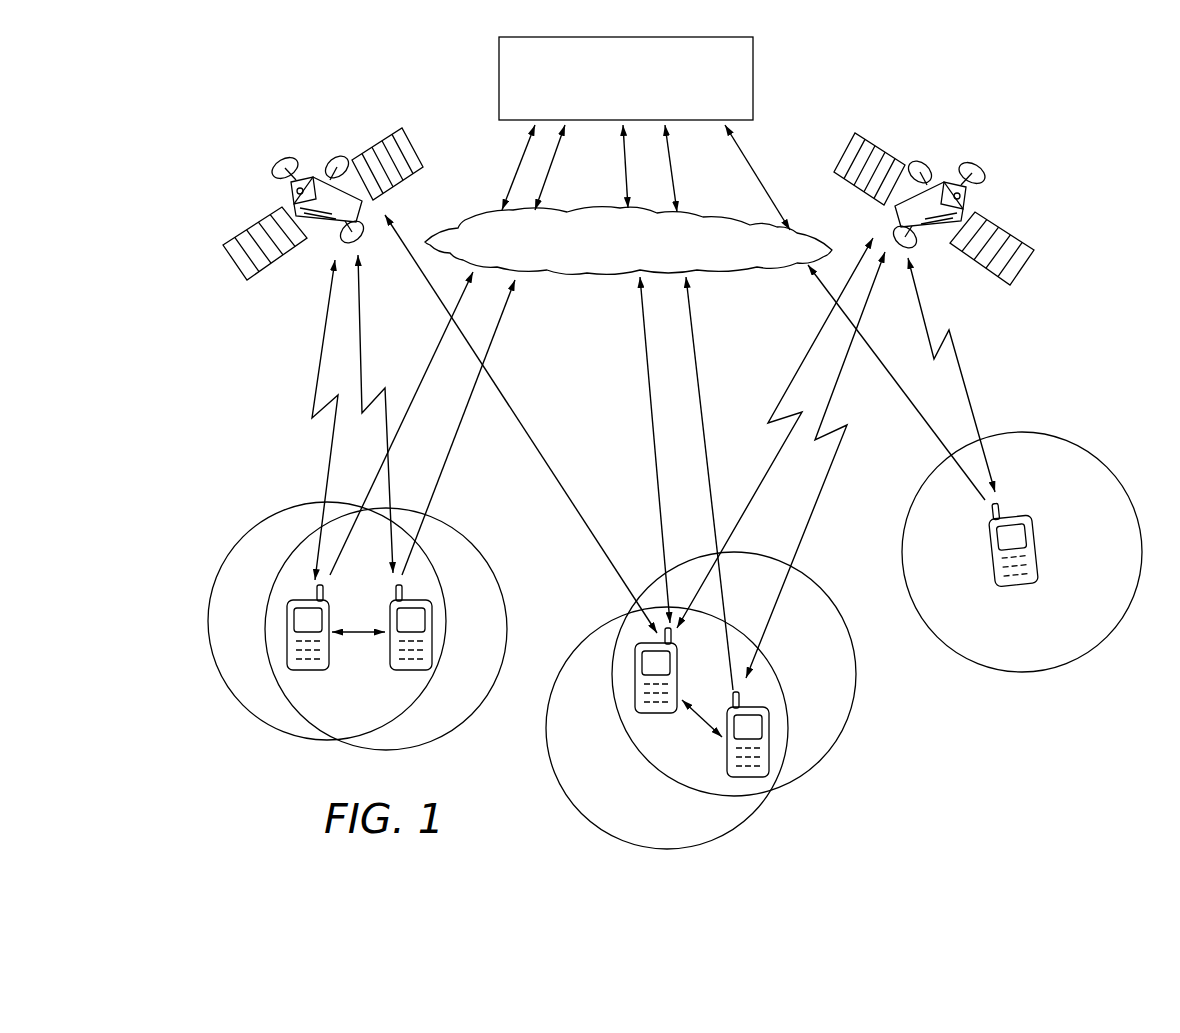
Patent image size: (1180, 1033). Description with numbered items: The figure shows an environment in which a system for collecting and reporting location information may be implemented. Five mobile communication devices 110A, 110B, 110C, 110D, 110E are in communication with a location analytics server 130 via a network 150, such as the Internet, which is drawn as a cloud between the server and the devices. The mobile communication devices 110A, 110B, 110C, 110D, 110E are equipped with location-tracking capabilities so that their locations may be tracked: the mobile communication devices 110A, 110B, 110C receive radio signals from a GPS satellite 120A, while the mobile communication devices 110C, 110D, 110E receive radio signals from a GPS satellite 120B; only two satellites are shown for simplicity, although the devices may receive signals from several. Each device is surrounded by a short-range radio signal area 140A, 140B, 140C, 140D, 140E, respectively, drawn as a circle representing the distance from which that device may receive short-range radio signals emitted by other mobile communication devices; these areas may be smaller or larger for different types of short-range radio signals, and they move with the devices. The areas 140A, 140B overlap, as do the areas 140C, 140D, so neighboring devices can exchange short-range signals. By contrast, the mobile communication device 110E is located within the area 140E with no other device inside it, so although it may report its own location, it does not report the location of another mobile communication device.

The mobile communication device 110A is at (300, 598).
The mobile communication device 110B is at (416, 600).
The mobile communication device 110C is at (653, 713).
The mobile communication device 110D is at (763, 777).
The mobile communication device 110E is at (1008, 587).
The GPS satellite 120A is at (317, 177).
The GPS satellite 120B is at (947, 183).
The location analytics server 130 is at (753, 75).
The short-range radio signal area 140A is at (223, 567).
The short-range radio signal area 140B is at (463, 723).
The short-range radio signal area 140C is at (580, 645).
The short-range radio signal area 140D is at (840, 737).
The short-range radio signal area 140E is at (1090, 650).
The network 150 is at (590, 280).